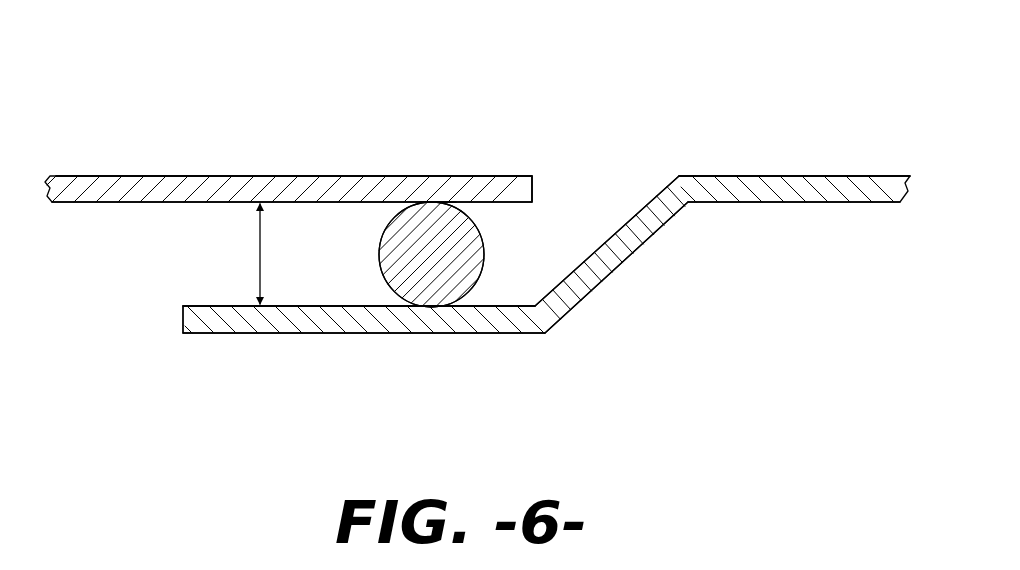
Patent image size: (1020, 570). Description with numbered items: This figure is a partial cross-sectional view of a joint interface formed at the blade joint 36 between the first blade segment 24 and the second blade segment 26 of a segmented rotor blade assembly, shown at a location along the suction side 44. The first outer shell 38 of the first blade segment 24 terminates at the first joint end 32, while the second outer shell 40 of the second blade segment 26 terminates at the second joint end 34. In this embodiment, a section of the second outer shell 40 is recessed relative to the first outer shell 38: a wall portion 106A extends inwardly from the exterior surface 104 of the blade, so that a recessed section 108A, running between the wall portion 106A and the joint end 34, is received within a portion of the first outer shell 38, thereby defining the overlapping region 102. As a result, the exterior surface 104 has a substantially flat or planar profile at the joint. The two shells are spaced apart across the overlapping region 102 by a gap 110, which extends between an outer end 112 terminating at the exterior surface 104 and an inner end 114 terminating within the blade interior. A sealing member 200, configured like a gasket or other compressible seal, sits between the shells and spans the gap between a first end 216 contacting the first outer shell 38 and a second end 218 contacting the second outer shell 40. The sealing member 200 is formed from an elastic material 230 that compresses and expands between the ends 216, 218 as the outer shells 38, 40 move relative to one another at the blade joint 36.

The first blade segment 24 is at (158, 106).
The second blade segment 26 is at (844, 99).
The first joint end 32 is at (533, 188).
The second joint end 34 is at (183, 320).
The blade joint 36 is at (607, 88).
The first outer shell 38 is at (161, 174).
The second outer shell 40 is at (727, 174).
The suction side 44 is at (337, 176).
The exterior surface 104 is at (787, 176).
The overlapping region 102 is at (543, 397).
The wall portion 106A is at (622, 247).
The recessed section 108A is at (375, 315).
The gap 110 is at (260, 258).
The outer end 112 is at (618, 175).
The inner end 114 is at (138, 248).
The sealing member 200 is at (465, 253).
The first end 216 is at (438, 202).
The second end 218 is at (428, 308).
The elastic material 230 is at (403, 234).